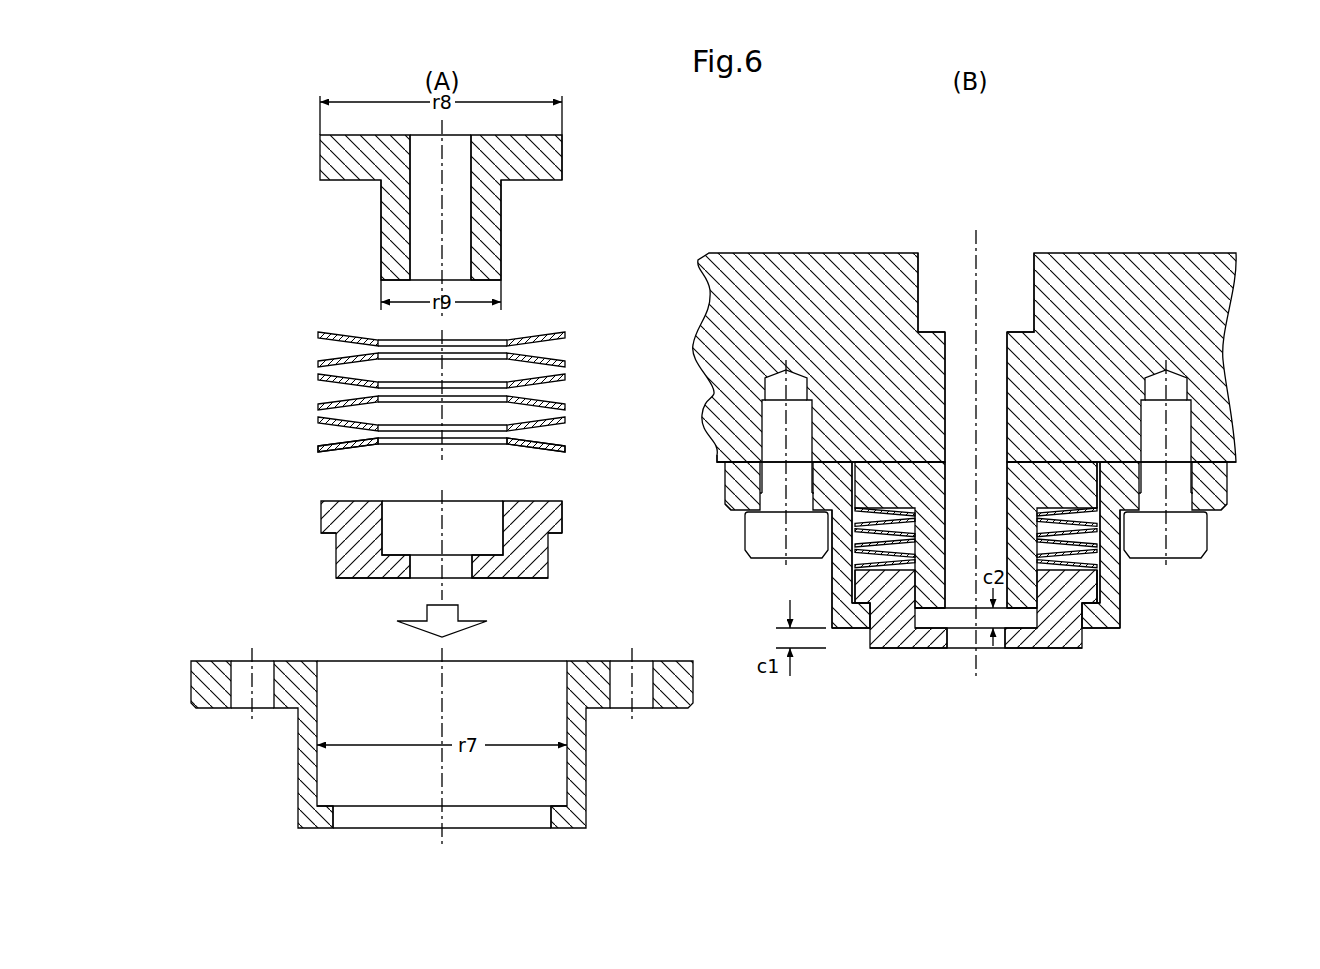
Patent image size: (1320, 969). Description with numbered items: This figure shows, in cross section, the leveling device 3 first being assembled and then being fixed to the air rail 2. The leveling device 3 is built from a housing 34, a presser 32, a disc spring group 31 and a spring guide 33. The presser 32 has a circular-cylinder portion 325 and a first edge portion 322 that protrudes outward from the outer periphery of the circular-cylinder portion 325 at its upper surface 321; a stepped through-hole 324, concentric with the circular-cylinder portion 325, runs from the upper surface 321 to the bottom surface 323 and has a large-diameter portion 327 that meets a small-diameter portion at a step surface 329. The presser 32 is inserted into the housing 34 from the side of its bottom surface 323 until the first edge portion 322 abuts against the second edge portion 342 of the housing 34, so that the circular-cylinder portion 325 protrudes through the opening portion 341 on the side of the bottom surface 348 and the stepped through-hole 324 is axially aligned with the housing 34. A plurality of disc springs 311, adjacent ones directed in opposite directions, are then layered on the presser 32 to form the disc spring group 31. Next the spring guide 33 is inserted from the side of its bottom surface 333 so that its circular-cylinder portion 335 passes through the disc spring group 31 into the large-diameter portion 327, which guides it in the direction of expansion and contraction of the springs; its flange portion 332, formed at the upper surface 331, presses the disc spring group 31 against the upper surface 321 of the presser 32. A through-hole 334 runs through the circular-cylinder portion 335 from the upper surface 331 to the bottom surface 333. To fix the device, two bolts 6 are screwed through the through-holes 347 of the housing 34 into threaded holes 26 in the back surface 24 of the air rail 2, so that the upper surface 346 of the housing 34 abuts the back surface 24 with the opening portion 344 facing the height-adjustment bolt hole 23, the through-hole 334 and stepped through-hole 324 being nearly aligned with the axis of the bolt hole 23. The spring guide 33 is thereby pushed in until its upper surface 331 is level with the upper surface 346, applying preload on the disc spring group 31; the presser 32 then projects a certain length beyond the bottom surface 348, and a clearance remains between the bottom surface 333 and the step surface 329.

The air rail 2 is at (1200, 238).
The leveling device 3 is at (1199, 643).
The bolts 6 is at (750, 558).
The height-adjustment bolt hole 23 is at (996, 262).
The back surface 24 is at (1232, 468).
The threaded holes 26 is at (765, 391).
The disc spring group 31 is at (301, 402).
The disc springs 311 is at (556, 441).
The presser 32 is at (301, 507).
The upper surface 321 is at (1040, 585).
The first edge portion 322 is at (565, 509).
The bottom surface 323 is at (369, 578).
The stepped through-hole 324 is at (432, 572).
The circular-cylinder portion 325 is at (336, 535).
The large-diameter portion 327 is at (456, 515).
The step surface 329 is at (1012, 622).
The spring guide 33 is at (300, 137).
The upper surface 331 is at (890, 462).
The flange portion 332 is at (563, 150).
The bottom surface 333 is at (384, 283).
The through-hole 334 is at (456, 143).
The circular-cylinder portion 335 is at (506, 183).
The housing 34 is at (296, 653).
The opening portion 341 is at (868, 630).
The second edge portion 342 is at (328, 830).
The opening portion 344 is at (853, 458).
The upper surface 346 is at (717, 456).
The through-holes 347 is at (744, 497).
The bottom surface 348 is at (1120, 629).